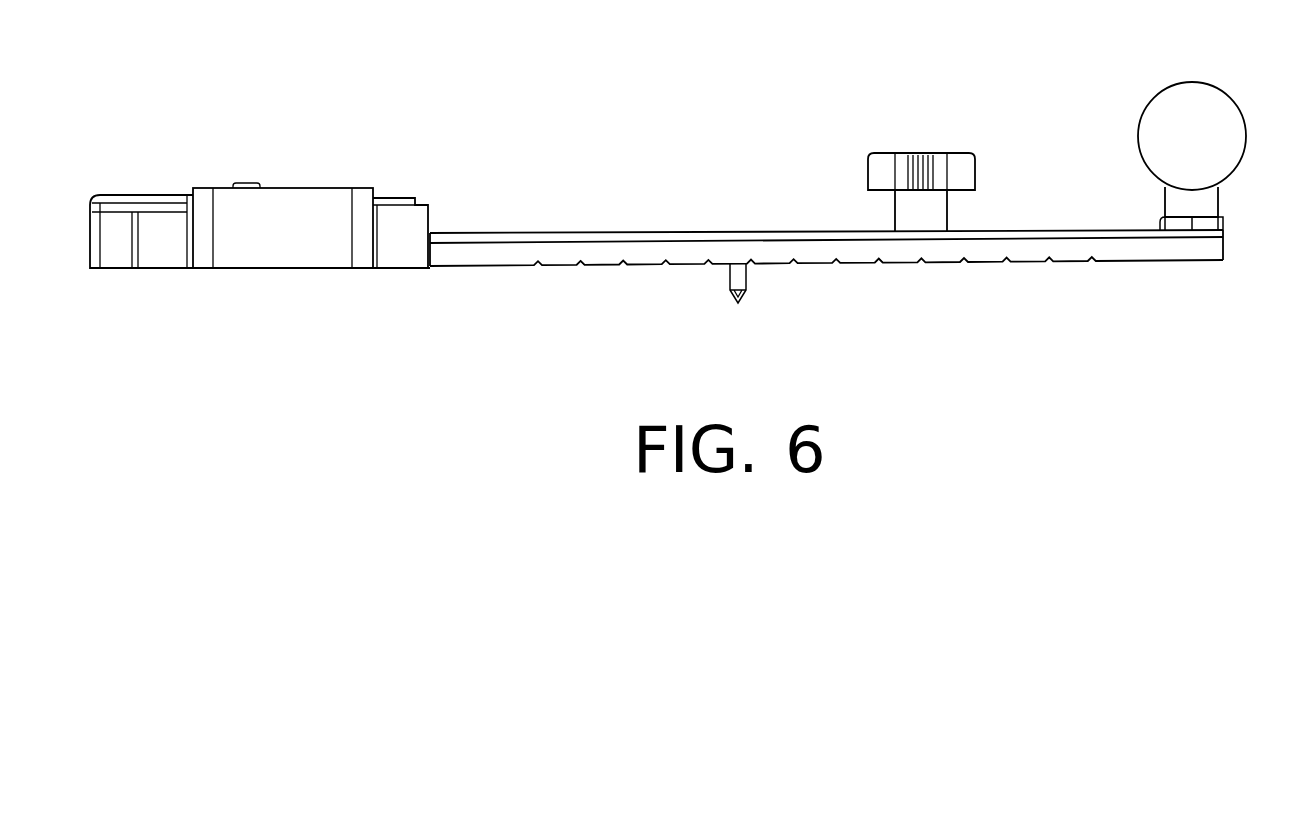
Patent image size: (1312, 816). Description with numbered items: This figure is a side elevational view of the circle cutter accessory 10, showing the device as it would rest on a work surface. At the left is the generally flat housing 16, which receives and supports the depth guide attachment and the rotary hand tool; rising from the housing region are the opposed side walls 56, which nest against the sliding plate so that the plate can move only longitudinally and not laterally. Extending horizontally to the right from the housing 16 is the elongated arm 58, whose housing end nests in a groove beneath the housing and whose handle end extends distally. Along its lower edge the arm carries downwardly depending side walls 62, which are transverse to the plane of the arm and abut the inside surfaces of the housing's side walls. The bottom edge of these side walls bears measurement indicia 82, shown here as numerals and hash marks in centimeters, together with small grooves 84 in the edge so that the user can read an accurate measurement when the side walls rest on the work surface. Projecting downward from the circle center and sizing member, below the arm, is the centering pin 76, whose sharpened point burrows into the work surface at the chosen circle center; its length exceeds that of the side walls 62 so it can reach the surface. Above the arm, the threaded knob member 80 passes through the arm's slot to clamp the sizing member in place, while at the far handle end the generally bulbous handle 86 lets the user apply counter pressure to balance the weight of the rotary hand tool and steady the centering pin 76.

The circle cutter accessory 10 is at (527, 80).
The housing 16 is at (157, 270).
The side walls 56 is at (285, 255).
The elongated arm 58 is at (992, 286).
The downwardly depending side walls 62 is at (450, 255).
The centering pin 76 is at (722, 280).
The threaded knob member 80 is at (965, 176).
The measurement indicia 82 is at (576, 262).
The small grooves 84 is at (880, 265).
The handle 86 is at (1213, 88).